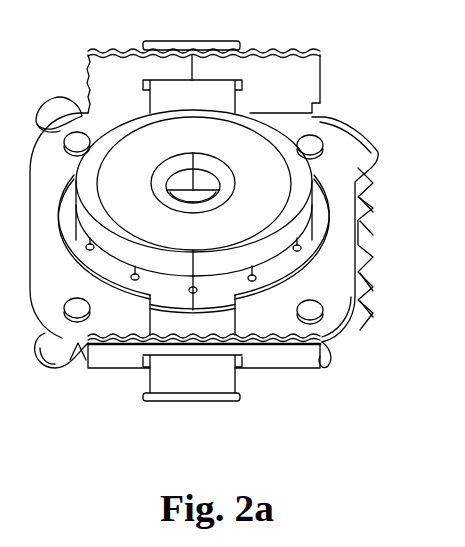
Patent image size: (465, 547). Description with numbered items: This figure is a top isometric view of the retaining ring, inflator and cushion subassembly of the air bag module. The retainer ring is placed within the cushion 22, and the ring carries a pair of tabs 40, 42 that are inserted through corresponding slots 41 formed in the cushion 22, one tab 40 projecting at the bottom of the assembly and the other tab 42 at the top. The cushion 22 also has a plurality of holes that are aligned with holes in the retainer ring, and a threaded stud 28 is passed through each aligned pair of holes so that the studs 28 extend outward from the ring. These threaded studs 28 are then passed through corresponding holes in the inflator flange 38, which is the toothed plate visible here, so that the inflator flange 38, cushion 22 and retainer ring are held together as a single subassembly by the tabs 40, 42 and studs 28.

The cushion 22 is at (363, 323).
The threaded stud 28 is at (312, 313).
The inflator flange 38 is at (343, 233).
The tab 40 is at (227, 390).
The slot 41 is at (249, 368).
The tab 42 is at (203, 42).